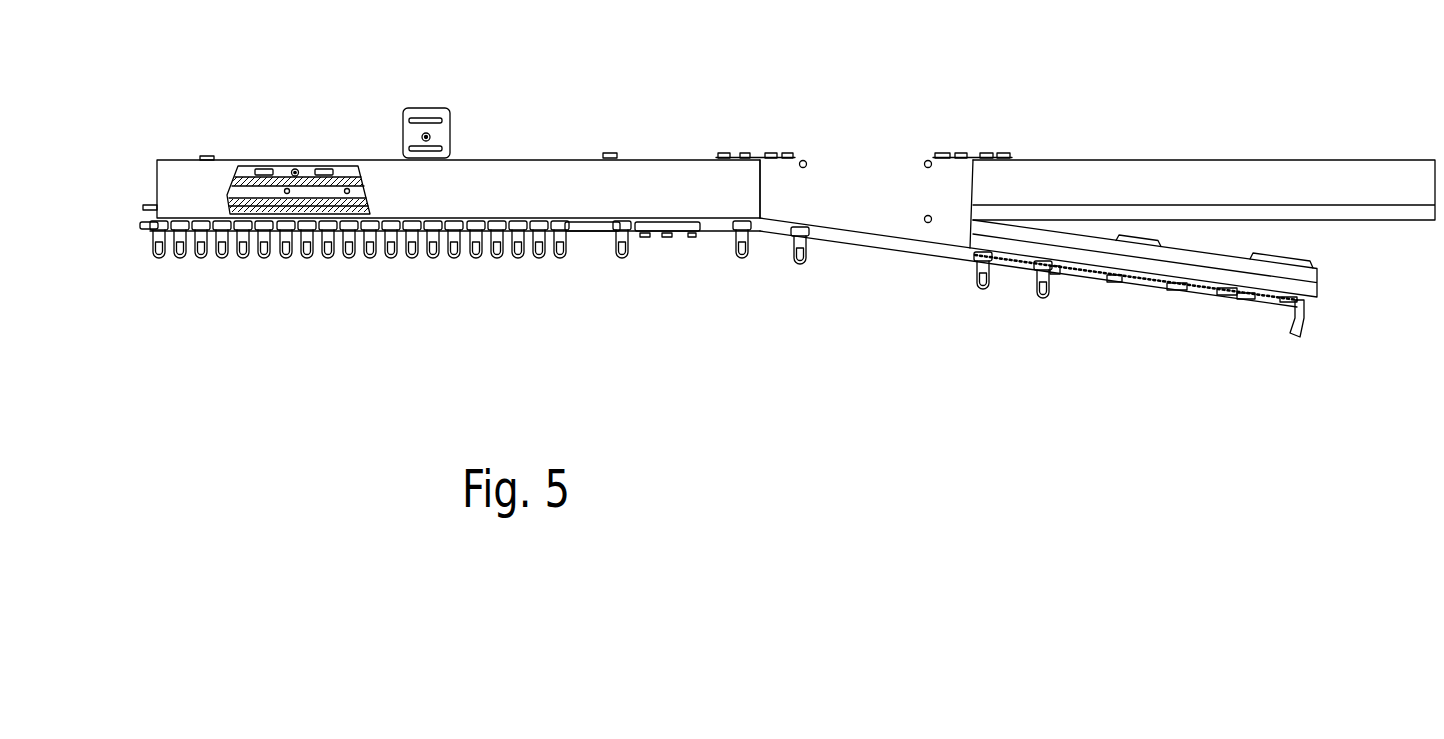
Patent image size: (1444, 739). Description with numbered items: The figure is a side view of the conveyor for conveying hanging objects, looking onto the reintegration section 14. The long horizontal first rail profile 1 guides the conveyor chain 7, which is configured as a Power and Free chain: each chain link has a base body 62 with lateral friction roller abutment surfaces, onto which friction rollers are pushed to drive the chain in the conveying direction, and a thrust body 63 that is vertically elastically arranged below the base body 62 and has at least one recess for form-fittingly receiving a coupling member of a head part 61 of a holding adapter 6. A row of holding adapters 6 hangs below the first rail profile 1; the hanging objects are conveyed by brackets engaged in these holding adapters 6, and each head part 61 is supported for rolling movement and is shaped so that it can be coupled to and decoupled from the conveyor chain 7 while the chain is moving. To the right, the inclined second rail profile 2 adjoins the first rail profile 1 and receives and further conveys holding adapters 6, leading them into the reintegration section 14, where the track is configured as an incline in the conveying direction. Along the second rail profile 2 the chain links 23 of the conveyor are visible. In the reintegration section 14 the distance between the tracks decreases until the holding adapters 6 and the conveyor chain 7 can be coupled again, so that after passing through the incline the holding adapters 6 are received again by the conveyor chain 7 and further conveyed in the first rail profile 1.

The first rail profile 1 is at (177, 165).
The second rail profile 2 is at (1199, 272).
The holding adapter 6 is at (147, 240).
The conveyor chain 7 is at (303, 131).
The reintegration section 14 is at (860, 145).
The chain links 23 is at (1050, 272).
The head part 61 is at (338, 197).
The base body 62 is at (240, 188).
The thrust body 63 is at (232, 212).